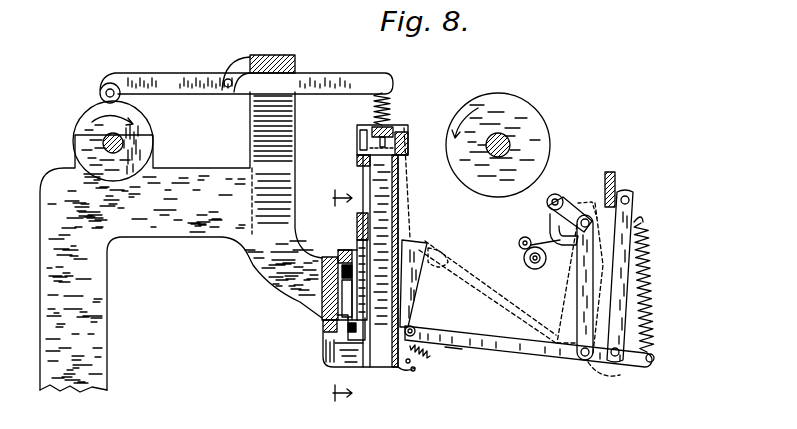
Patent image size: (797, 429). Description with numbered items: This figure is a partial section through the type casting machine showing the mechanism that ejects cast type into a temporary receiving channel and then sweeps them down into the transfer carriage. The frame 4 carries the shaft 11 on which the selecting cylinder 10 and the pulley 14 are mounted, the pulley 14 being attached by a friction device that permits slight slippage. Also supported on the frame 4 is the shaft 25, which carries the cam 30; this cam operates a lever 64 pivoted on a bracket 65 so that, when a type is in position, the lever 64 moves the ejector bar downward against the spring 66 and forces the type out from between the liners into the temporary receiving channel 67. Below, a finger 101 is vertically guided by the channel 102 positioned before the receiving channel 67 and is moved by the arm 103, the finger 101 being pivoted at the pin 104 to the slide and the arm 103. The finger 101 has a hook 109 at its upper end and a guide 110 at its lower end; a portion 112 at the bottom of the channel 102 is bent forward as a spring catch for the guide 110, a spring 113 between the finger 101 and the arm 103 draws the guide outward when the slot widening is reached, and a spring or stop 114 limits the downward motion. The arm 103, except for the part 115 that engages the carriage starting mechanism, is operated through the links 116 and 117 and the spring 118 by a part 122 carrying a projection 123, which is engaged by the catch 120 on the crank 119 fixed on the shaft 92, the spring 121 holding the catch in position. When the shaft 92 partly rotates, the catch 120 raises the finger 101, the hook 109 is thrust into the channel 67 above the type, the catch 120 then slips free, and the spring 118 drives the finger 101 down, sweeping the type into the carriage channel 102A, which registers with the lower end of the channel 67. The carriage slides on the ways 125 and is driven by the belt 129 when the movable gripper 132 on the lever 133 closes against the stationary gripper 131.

The frame 4 is at (633, 180).
The selecting cylinder 10 is at (528, 130).
The shaft 11 is at (504, 147).
The pulley 14 is at (335, 291).
The shaft 25 is at (103, 143).
The cam 30 is at (88, 122).
The lever 64 is at (182, 78).
The bracket 65 is at (229, 76).
The spring 66 is at (390, 114).
The temporary receiving channel 67 is at (388, 200).
The shaft 92 is at (524, 260).
The finger 101 is at (413, 303).
The channel 102 is at (399, 220).
The receiving channel 102A is at (384, 330).
The arm 103 is at (473, 341).
The pin 104 is at (415, 327).
The hook 109 is at (430, 244).
The guide 110 is at (409, 363).
The spring catch 112 is at (414, 372).
The spring 113 is at (425, 356).
The spring or stop 114 is at (390, 372).
The part 115 is at (462, 349).
The link 116 is at (653, 283).
The link 117 is at (584, 291).
The spring 118 is at (655, 316).
The crank 119 is at (521, 245).
The catch 120 is at (554, 243).
The spring 121 is at (533, 269).
The part 122 is at (562, 212).
The projection 123 is at (566, 240).
The ways 125 is at (341, 252).
The belt 129 is at (345, 282).
The stationary gripper 131 is at (350, 302).
The movable gripper 132 is at (342, 270).
The lever 133 is at (356, 237).